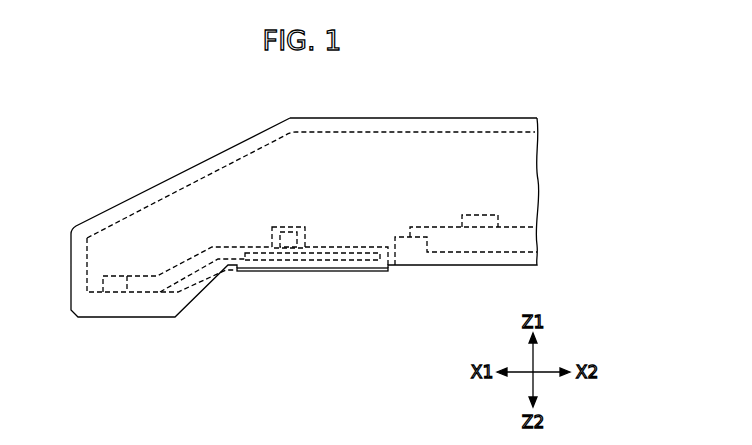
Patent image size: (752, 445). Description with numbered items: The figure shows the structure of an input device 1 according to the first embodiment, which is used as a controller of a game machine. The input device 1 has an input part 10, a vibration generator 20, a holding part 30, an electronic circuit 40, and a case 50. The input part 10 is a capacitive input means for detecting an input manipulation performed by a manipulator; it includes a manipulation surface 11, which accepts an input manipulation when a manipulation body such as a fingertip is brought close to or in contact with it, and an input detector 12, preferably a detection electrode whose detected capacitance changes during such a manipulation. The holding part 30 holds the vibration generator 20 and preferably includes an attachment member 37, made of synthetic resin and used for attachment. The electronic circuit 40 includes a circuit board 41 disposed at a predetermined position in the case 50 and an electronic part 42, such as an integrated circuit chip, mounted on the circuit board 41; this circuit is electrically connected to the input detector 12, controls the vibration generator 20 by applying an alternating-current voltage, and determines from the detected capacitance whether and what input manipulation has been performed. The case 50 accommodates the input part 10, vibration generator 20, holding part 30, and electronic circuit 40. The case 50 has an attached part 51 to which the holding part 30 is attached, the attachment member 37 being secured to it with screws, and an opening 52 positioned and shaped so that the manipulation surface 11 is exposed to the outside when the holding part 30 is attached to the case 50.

The input device 1 is at (188, 99).
The input part 10 is at (345, 326).
The manipulation surface 11 is at (332, 266).
The input detector 12 is at (270, 261).
The vibration generator 20 is at (286, 228).
The holding part 30 is at (260, 247).
The attachment member 37 is at (125, 275).
The electronic circuit 40 is at (373, 79).
The circuit board 41 is at (433, 227).
The electronic part 42 is at (482, 215).
The case 50 is at (143, 193).
The attached part 51 is at (127, 304).
The opening 52 is at (382, 275).